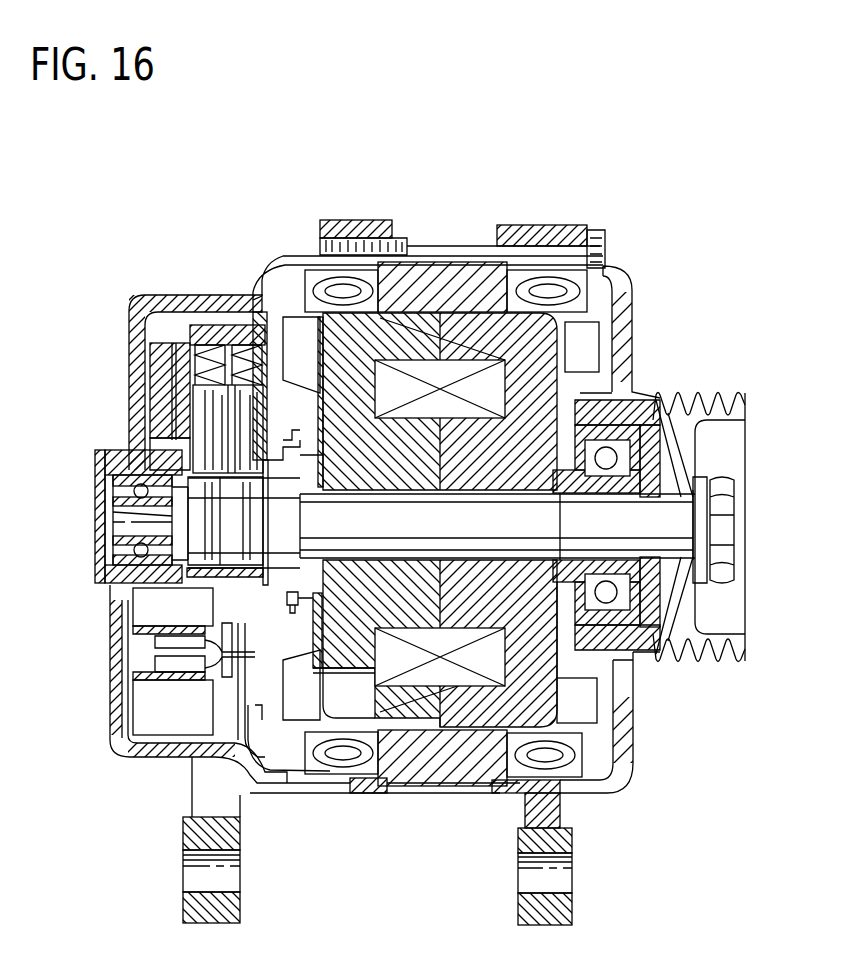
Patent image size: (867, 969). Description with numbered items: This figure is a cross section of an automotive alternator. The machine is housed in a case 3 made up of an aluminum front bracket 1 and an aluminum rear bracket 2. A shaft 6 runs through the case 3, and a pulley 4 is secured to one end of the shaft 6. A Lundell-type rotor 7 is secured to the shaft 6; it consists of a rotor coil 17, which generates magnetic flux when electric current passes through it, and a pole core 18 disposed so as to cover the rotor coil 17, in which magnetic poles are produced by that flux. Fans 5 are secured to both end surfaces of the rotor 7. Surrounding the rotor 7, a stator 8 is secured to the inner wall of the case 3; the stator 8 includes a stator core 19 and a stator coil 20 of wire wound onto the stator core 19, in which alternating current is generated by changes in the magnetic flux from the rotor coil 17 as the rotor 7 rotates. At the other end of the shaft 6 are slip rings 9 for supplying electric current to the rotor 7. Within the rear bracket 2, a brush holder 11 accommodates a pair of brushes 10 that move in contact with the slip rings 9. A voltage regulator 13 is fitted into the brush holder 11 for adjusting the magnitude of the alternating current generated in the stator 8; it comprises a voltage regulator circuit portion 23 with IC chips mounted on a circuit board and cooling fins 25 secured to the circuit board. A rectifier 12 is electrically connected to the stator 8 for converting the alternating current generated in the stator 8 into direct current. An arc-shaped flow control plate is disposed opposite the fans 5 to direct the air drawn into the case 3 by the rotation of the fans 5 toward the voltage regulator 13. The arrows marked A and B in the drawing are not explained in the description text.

The voltage regulator circuit portion 23 is at (158, 300).
The voltage regulator 13 is at (152, 353).
The cooling fins 25 is at (152, 406).
The direction A is at (174, 325).
The brushes 10 is at (216, 330).
The brush holder 11 is at (235, 325).
The fans 5 is at (307, 337).
The direction B is at (278, 405).
The stator core 19 is at (418, 280).
The stator coil 20 is at (548, 288).
The stator 8 is at (470, 285).
The rotor coil 17 is at (487, 670).
The pole core 18 is at (445, 715).
The shaft 6 is at (700, 528).
The pulley 4 is at (747, 447).
The case 3 is at (632, 300).
The front bracket 1 is at (628, 742).
The rotor 7 is at (570, 700).
The slip rings 9 is at (205, 520).
The rectifier 12 is at (187, 662).
The rear bracket 2 is at (140, 758).